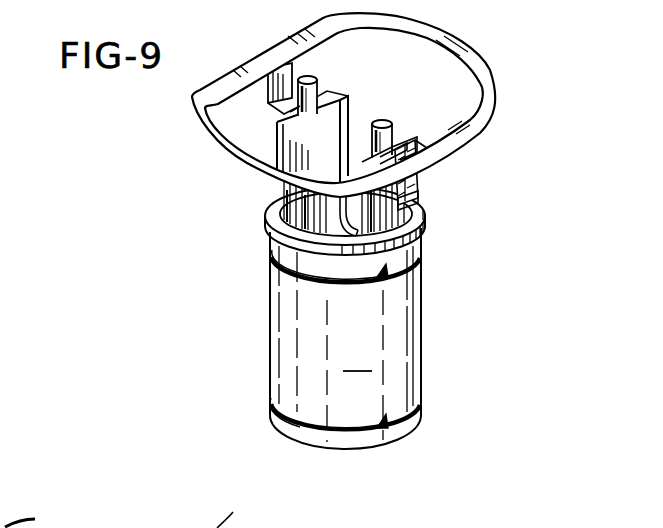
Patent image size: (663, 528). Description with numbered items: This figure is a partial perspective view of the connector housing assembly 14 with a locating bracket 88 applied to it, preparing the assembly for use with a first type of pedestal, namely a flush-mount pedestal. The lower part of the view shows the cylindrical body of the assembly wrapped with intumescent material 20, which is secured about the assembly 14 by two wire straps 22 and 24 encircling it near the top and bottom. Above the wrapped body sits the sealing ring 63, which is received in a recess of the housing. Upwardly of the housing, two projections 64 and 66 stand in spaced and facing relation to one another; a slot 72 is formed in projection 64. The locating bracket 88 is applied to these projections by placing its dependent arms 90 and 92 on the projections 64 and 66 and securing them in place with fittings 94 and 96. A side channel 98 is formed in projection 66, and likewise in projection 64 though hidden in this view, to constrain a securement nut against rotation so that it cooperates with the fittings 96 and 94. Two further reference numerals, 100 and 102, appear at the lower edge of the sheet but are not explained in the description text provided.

The connector housing assembly 14 is at (373, 318).
The intumescent material 20 is at (345, 338).
The wire strap 22 is at (374, 274).
The wire strap 24 is at (358, 425).
The sealing ring 63 is at (270, 202).
The projection 64 is at (345, 117).
The projection 66 is at (425, 183).
The slot 72 is at (265, 168).
The locating bracket 88 is at (447, 31).
The dependent arm 90 is at (312, 60).
The dependent arm 92 is at (430, 165).
The fitting 94 is at (243, 107).
The fitting 96 is at (395, 126).
The side channel 98 is at (415, 192).
The element 100 is at (249, 512).
The element 102 is at (87, 516).